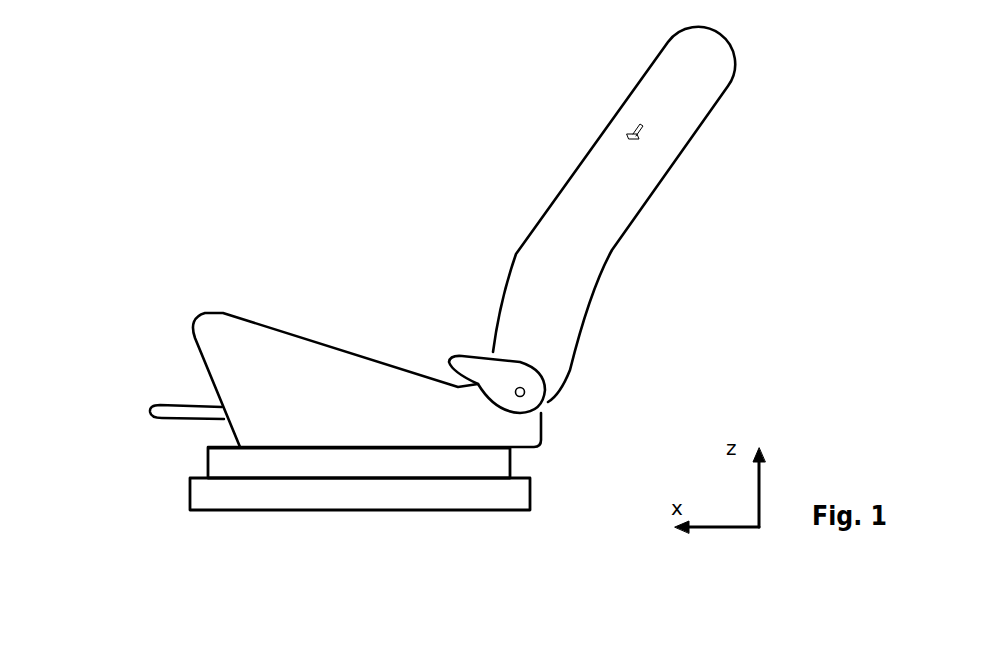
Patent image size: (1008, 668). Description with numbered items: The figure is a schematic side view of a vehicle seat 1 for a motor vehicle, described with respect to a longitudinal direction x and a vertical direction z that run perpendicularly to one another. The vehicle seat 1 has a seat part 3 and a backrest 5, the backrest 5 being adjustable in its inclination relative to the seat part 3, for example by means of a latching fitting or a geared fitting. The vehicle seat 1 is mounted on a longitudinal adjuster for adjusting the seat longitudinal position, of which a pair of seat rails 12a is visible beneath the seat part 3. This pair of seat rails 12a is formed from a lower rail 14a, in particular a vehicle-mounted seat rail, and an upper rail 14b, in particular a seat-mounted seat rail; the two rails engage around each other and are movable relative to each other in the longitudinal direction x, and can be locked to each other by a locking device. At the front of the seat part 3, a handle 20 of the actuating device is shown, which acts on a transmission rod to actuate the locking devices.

The vehicle seat 1 is at (273, 110).
The seat part 3 is at (322, 370).
The backrest 5 is at (573, 178).
The pair of seat rails 12a is at (355, 453).
The lower rail 14a is at (490, 498).
The upper rail 14b is at (490, 467).
The handle 20 is at (167, 407).